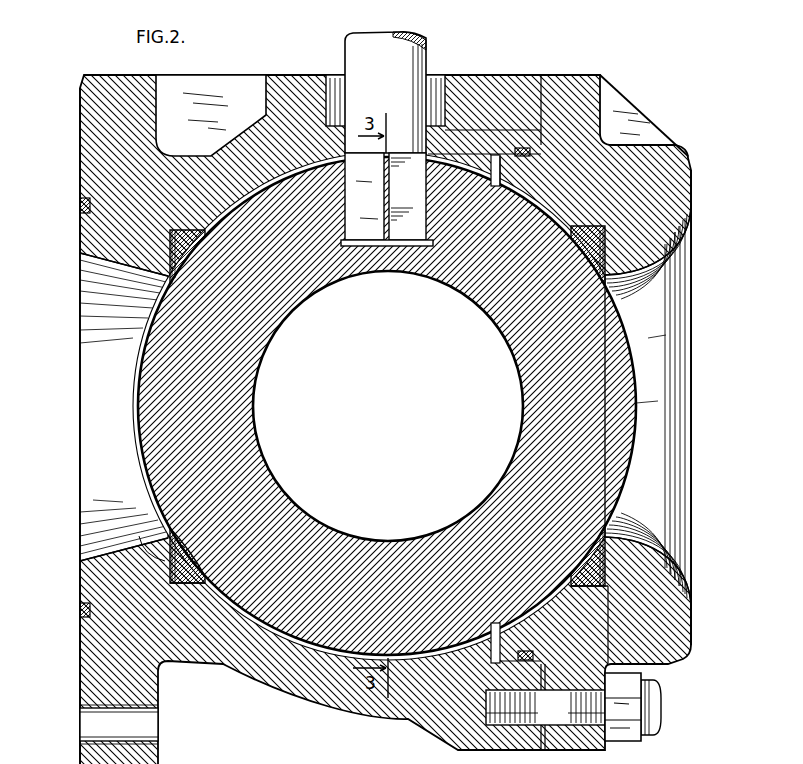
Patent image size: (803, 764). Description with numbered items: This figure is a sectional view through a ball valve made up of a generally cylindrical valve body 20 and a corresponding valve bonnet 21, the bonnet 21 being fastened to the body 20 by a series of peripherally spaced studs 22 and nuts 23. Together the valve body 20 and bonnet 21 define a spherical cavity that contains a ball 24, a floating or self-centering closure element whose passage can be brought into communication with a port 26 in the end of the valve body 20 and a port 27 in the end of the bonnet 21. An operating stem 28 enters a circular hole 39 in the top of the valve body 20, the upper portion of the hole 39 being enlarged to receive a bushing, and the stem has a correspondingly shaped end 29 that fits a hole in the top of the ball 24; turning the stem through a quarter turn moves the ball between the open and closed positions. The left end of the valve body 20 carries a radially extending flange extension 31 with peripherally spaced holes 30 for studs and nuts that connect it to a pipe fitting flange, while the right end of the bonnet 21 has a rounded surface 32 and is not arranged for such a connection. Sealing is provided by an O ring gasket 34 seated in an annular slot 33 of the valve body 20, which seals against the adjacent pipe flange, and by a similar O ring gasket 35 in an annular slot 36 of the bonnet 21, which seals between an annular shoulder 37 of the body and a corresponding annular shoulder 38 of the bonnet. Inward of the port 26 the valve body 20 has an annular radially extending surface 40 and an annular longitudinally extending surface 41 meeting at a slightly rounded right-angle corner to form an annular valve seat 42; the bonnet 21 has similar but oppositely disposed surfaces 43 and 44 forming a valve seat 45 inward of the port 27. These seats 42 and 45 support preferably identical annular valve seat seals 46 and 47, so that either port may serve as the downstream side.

The valve body 20 is at (82, 648).
The valve bonnet 21 is at (672, 632).
The stud 22 is at (655, 694).
The nut 23 is at (622, 727).
The ball 24 is at (142, 416).
The port 26 is at (84, 377).
The port 27 is at (669, 386).
The operating stem 28 is at (411, 48).
The correspondingly shaped end 29 is at (380, 236).
The peripherally spaced holes 30 is at (82, 716).
The flange extension 31 is at (82, 745).
The rounded surface 32 is at (665, 572).
The annular slot 33 is at (76, 186).
The O ring gasket 34 is at (74, 203).
The O ring gasket 35 is at (514, 139).
The annular slot 36 is at (518, 150).
The annular shoulder 37 is at (500, 652).
The annular shoulder 38 is at (503, 645).
The circular hole 39 is at (326, 78).
The annular radially extending surface 40 is at (144, 538).
The annular longitudinally extending surface 41 is at (178, 577).
The annular valve seat 42 is at (160, 586).
The surface 43 is at (600, 536).
The surface 44 is at (590, 580).
The valve seat 45 is at (614, 581).
The annular valve seat seal 46 is at (180, 545).
The annular valve seat seal 47 is at (578, 548).